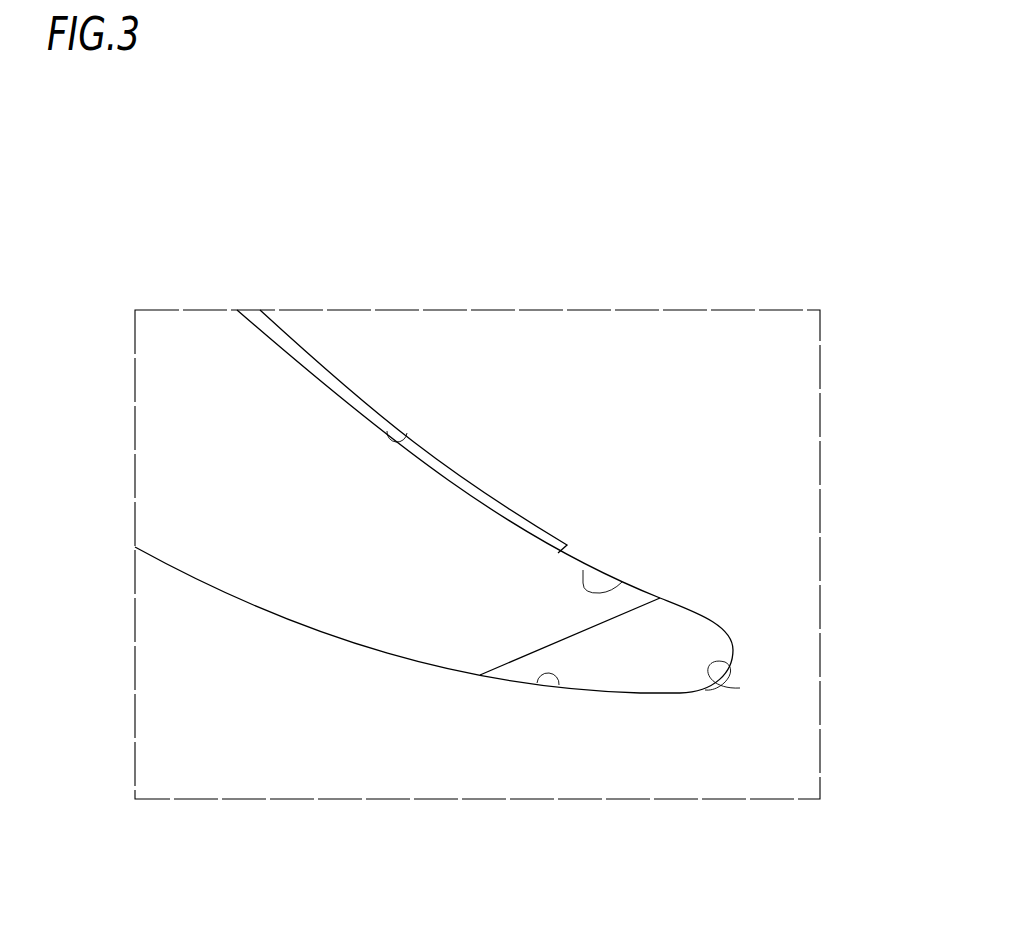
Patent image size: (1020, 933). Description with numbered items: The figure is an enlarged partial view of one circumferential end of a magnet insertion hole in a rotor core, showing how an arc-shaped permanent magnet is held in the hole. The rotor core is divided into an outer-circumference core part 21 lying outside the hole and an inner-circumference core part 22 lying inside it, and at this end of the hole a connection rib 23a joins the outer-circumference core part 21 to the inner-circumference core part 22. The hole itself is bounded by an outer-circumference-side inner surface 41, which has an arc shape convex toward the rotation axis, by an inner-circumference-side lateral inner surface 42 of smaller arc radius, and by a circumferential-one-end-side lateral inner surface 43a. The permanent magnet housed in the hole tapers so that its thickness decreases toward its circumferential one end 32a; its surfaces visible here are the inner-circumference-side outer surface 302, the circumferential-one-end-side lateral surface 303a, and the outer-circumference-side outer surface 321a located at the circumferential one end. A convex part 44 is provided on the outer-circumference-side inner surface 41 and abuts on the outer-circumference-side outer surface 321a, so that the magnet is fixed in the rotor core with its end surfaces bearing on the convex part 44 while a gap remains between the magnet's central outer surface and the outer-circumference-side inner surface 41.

The outer-circumference core part 21 is at (650, 395).
The inner-circumference core part 22 is at (188, 745).
The connection rib 23a is at (788, 663).
The inner-circumference-side outer surface 302 is at (313, 632).
The circumferential one end 32a is at (445, 600).
The outer-circumference-side outer surface 321a is at (477, 500).
The circumferential-one-end-side lateral surface 303a is at (582, 633).
The outer-circumference-side inner surface 41 is at (407, 440).
The inner-circumference-side lateral inner surface 42 is at (560, 687).
The circumferential-one-end-side lateral inner surface 43a is at (740, 688).
The convex part 44 is at (622, 582).